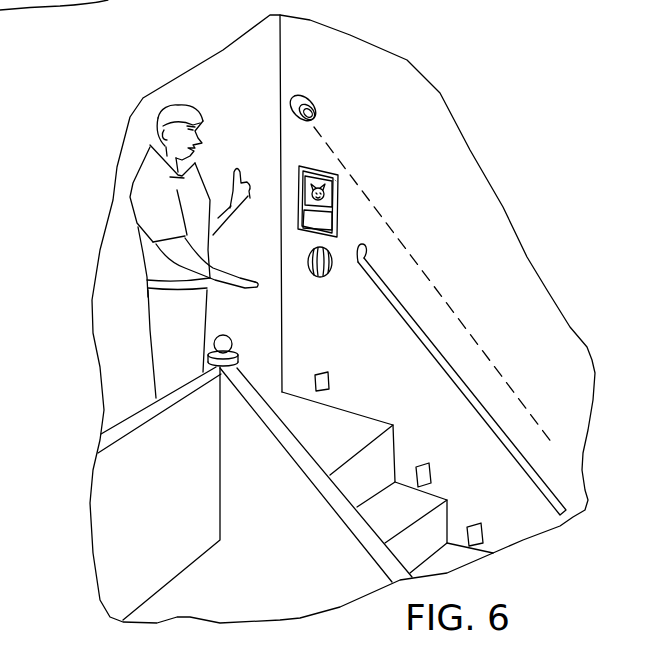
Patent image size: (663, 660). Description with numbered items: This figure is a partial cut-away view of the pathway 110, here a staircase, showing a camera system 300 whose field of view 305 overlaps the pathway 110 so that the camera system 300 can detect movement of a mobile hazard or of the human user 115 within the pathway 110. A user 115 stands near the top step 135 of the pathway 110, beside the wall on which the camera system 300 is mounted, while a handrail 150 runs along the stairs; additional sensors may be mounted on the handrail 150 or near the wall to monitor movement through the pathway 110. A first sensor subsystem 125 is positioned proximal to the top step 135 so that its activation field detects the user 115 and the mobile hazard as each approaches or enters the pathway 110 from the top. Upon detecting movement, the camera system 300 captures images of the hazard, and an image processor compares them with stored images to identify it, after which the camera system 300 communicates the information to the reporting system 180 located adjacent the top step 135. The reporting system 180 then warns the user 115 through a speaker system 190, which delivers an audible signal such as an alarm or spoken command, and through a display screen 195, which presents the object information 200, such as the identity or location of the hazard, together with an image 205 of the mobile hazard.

The pathway 110 is at (510, 530).
The user 115 is at (141, 187).
The first sensor subsystem 125 is at (317, 387).
The top step 135 is at (340, 433).
The handrail 150 is at (418, 332).
The reporting system 180 is at (340, 177).
The speaker system 190 is at (332, 263).
The display screen 195 is at (337, 188).
The object information 200 is at (337, 225).
The image of the mobile hazard 205 is at (298, 176).
The camera system 300 is at (315, 97).
The field of view 305 is at (334, 143).